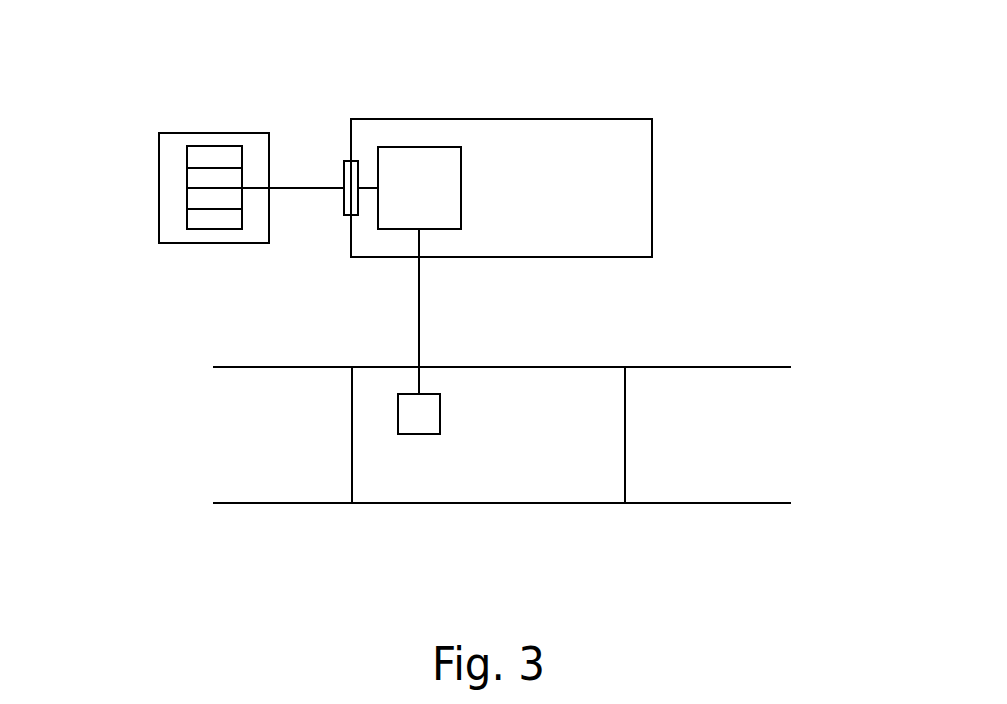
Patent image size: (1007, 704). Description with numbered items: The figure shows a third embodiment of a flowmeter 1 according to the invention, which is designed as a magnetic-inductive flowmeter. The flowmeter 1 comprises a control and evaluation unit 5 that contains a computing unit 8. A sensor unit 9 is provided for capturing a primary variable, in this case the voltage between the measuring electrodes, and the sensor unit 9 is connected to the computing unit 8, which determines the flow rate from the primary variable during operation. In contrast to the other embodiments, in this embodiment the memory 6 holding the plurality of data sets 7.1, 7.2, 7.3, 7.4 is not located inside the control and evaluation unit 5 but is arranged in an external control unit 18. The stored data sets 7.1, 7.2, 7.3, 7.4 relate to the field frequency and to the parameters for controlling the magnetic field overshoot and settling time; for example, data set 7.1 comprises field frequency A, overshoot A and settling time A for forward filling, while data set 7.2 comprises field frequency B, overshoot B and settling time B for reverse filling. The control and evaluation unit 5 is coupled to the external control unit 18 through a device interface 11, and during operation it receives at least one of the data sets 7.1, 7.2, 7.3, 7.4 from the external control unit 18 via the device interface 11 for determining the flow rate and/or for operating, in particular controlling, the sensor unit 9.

The flowmeter 1 is at (135, 68).
The control and evaluation unit 5 is at (617, 119).
The memory 6 is at (233, 146).
The data set 7.1 is at (193, 157).
The data set 7.2 is at (193, 180).
The data set 7.3 is at (193, 198).
The data set 7.4 is at (208, 223).
The computing unit 8 is at (433, 147).
The sensor unit 9 is at (418, 435).
The device interface 11 is at (347, 170).
The external control unit 18 is at (184, 290).